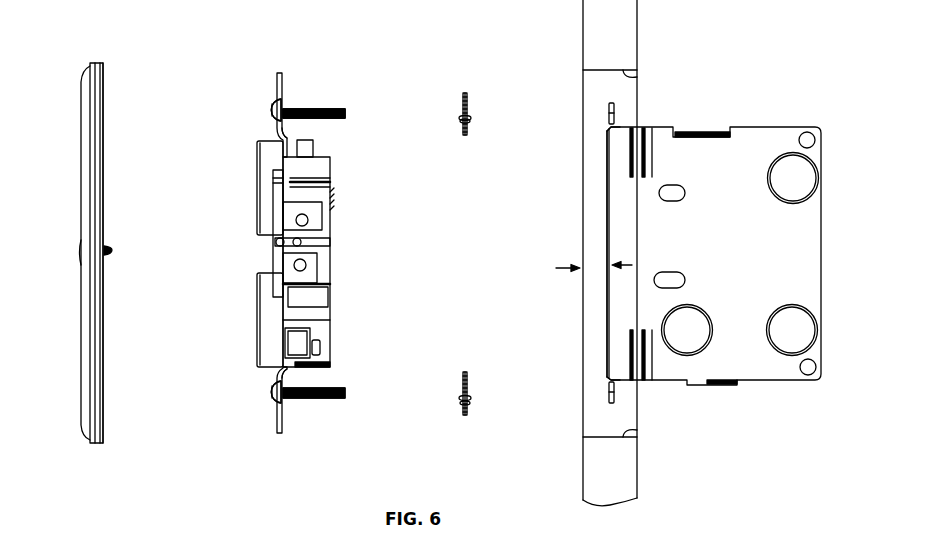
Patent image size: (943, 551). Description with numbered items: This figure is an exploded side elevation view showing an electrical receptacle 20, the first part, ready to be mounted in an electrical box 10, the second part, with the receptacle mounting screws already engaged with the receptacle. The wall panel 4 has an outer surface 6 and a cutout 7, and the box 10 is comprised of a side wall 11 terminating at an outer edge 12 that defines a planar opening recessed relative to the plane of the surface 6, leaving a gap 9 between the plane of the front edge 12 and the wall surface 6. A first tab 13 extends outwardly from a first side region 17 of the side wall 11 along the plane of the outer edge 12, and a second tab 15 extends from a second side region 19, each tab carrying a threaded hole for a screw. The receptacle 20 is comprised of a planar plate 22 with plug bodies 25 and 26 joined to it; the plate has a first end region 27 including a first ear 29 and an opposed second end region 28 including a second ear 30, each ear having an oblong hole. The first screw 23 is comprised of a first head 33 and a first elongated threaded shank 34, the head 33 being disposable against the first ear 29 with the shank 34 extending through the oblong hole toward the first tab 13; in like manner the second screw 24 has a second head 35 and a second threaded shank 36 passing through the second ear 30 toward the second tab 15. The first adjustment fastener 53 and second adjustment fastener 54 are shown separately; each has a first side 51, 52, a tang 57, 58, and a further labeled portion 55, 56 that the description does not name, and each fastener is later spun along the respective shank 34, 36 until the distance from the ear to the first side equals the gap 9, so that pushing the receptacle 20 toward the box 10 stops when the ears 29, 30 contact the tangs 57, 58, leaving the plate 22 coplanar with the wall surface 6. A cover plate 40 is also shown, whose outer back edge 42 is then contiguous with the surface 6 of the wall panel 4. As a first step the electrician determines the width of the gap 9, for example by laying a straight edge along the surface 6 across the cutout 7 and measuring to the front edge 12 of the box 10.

The wall panel 4 is at (649, 24).
The outer surface of the wall panel 6 is at (583, 32).
The cutout 7 is at (640, 75).
The gap 9 is at (600, 270).
The electrical box 10 is at (779, 112).
The side wall 11 is at (740, 127).
The outer edge 12 is at (606, 243).
The first tab 13 is at (608, 108).
The second tab 15 is at (608, 397).
The first side region 17 is at (619, 126).
The second side region 19 is at (620, 382).
The electrical receptacle 20 is at (346, 220).
The planar plate 22 is at (260, 82).
The first screw 23 is at (291, 88).
The second screw 24 is at (292, 414).
The plug body 25 is at (257, 184).
The plug body 26 is at (257, 310).
The first end region 27 is at (279, 131).
The second end region 28 is at (279, 378).
The first ear 29 is at (284, 125).
The second ear 30 is at (284, 385).
The first head 33 is at (268, 107).
The first elongated threaded shank 34 is at (325, 109).
The second head 35 is at (265, 409).
The second elongated threaded shank 36 is at (328, 399).
The cover plate 40 is at (72, 204).
The outer back edge 42 is at (105, 113).
The first side of the first adjustment fastener 51 is at (462, 104).
The first side of the second adjustment fastener 52 is at (462, 383).
The first adjustment fastener 53 is at (465, 93).
The second adjustment fastener 54 is at (465, 415).
The upper washer 55 is at (469, 121).
The lower washer 56 is at (469, 404).
The tang 57 is at (459, 118).
The tang 58 is at (459, 398).